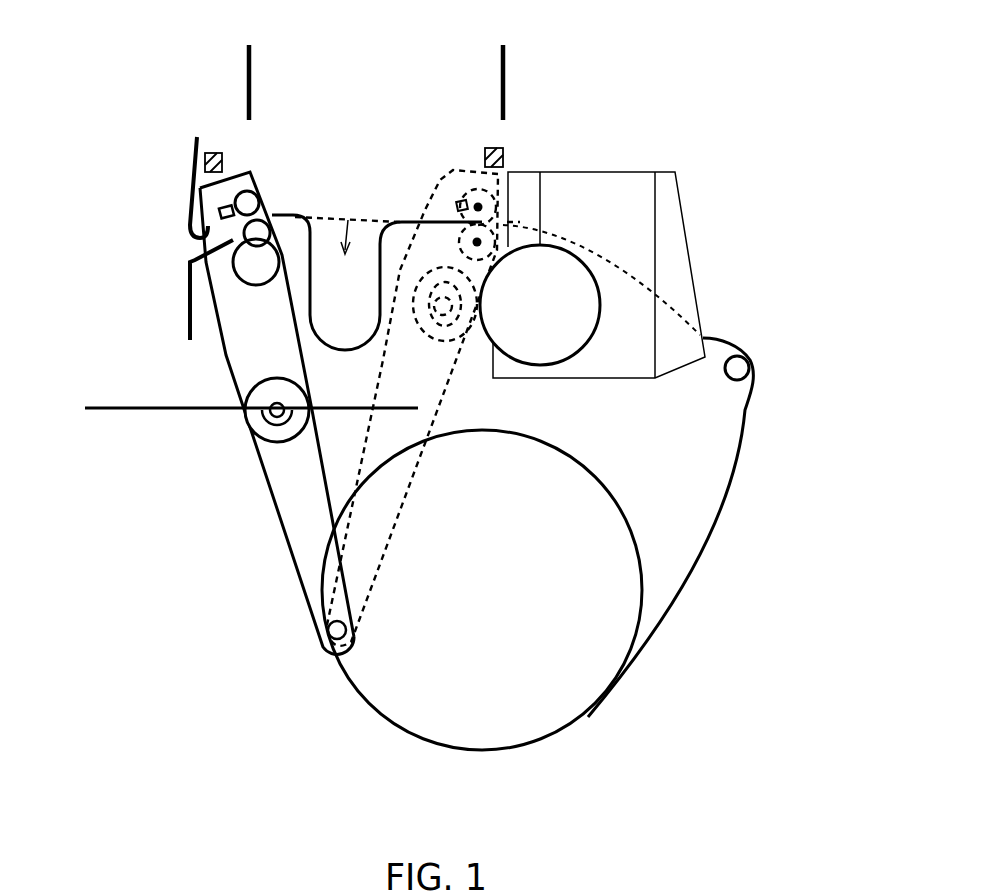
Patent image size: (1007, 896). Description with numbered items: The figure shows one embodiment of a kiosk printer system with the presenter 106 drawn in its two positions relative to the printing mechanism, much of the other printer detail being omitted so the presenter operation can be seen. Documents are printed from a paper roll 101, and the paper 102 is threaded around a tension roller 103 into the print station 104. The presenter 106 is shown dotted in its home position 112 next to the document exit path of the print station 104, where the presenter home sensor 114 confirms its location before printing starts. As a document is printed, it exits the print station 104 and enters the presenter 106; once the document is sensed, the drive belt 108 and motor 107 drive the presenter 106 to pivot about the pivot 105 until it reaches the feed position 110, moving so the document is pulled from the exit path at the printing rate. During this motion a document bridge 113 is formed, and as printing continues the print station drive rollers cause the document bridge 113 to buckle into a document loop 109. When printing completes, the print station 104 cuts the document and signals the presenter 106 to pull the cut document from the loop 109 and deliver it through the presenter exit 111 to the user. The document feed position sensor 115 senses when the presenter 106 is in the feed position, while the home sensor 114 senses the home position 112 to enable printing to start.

The paper roll 101 is at (507, 674).
The paper 102 is at (705, 522).
The tension roller 103 is at (752, 352).
The print station 104 is at (687, 242).
The pivot 105 is at (323, 643).
The presenter 106 is at (307, 527).
The motor 107 is at (267, 430).
The drive belt 108 is at (122, 405).
The document loop 109 is at (328, 332).
The feed position 110 is at (251, 67).
The presenter exit 111 is at (163, 252).
The home position 112 is at (507, 67).
The document bridge 113 is at (322, 218).
The presenter home sensor 114 is at (495, 148).
The document feed position sensor 115 is at (212, 152).